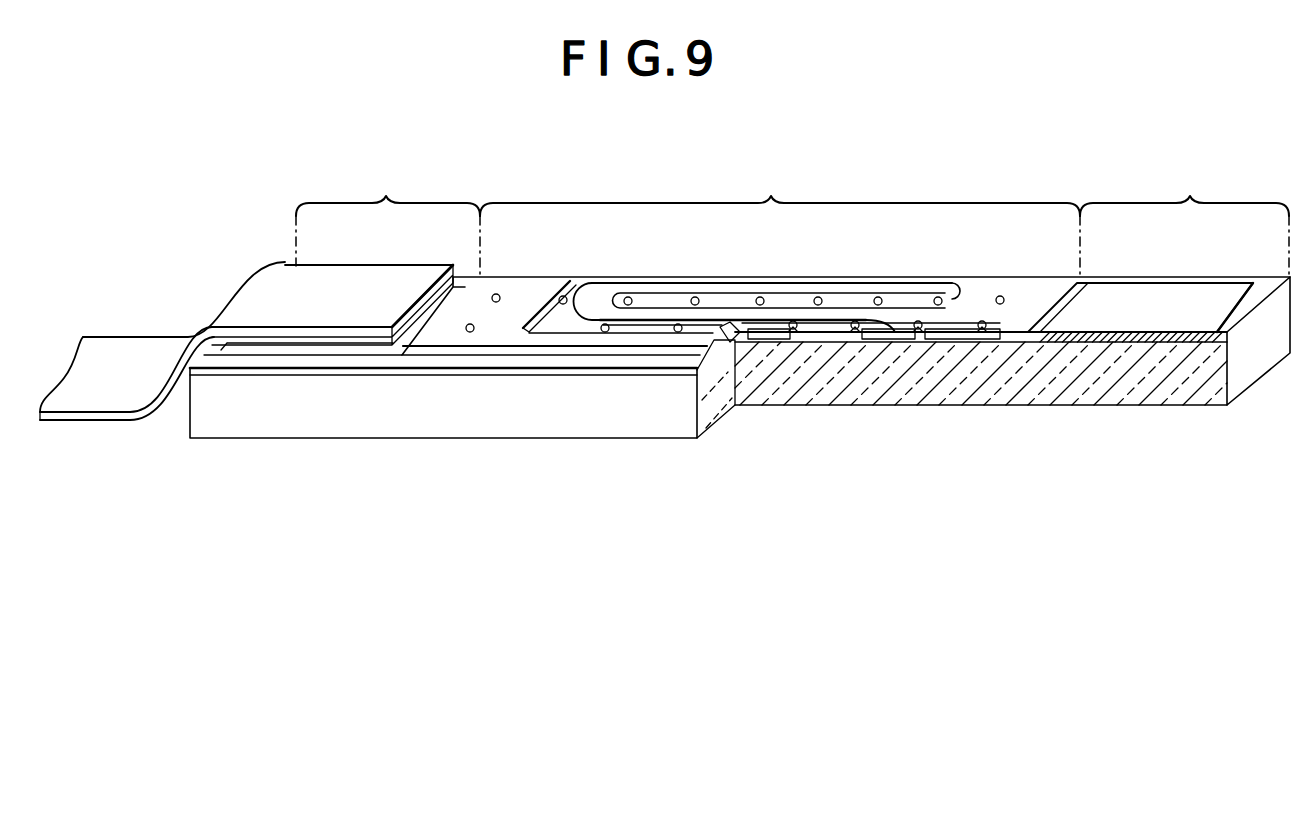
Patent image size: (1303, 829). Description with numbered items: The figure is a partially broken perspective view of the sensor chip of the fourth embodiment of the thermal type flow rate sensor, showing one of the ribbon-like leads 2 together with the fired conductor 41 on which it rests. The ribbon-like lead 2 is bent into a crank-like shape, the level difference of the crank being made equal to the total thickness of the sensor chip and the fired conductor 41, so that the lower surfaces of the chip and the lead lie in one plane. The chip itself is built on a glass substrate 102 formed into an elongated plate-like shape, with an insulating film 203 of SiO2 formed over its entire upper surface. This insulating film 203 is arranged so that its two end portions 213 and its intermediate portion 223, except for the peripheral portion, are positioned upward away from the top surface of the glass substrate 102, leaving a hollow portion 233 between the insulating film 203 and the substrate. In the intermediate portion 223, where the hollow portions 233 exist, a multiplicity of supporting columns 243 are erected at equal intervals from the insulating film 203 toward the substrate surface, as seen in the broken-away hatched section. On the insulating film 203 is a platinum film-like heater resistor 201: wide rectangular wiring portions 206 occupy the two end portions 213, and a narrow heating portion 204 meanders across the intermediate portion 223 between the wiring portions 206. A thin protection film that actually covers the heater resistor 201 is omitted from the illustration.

The ribbon-like lead 2 is at (129, 346).
The fired conductor 41 is at (256, 350).
The glass substrate 102 is at (555, 440).
The heater resistor 201 is at (1090, 343).
The insulating film 203 is at (428, 372).
The heating portion 204 is at (816, 288).
The wiring portion 206 is at (367, 276).
The end portion 213 is at (792, 216).
The intermediate portion 223 is at (780, 187).
The hollow portion 233 is at (772, 341).
The supporting column 243 is at (852, 341).